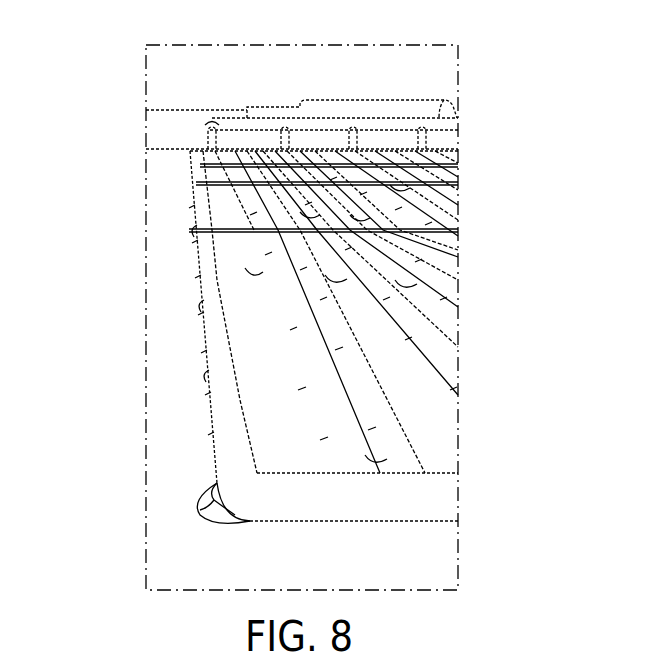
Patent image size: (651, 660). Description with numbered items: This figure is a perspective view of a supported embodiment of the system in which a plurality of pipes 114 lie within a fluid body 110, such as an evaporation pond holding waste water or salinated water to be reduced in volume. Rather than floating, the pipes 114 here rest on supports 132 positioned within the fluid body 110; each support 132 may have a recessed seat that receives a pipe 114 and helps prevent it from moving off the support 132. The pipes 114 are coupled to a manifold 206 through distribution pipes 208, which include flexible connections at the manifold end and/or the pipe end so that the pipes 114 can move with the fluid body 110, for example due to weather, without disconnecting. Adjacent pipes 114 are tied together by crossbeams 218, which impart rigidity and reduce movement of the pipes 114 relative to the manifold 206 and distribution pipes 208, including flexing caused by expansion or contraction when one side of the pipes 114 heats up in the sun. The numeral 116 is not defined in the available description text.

The fluid body 110 is at (167, 525).
The pipe 114 is at (228, 430).
The tray side wall 116 is at (205, 392).
The support 132 is at (218, 516).
The manifold 206 is at (263, 125).
The distribution pipe 208 is at (212, 128).
The crossbeam 218 is at (222, 228).